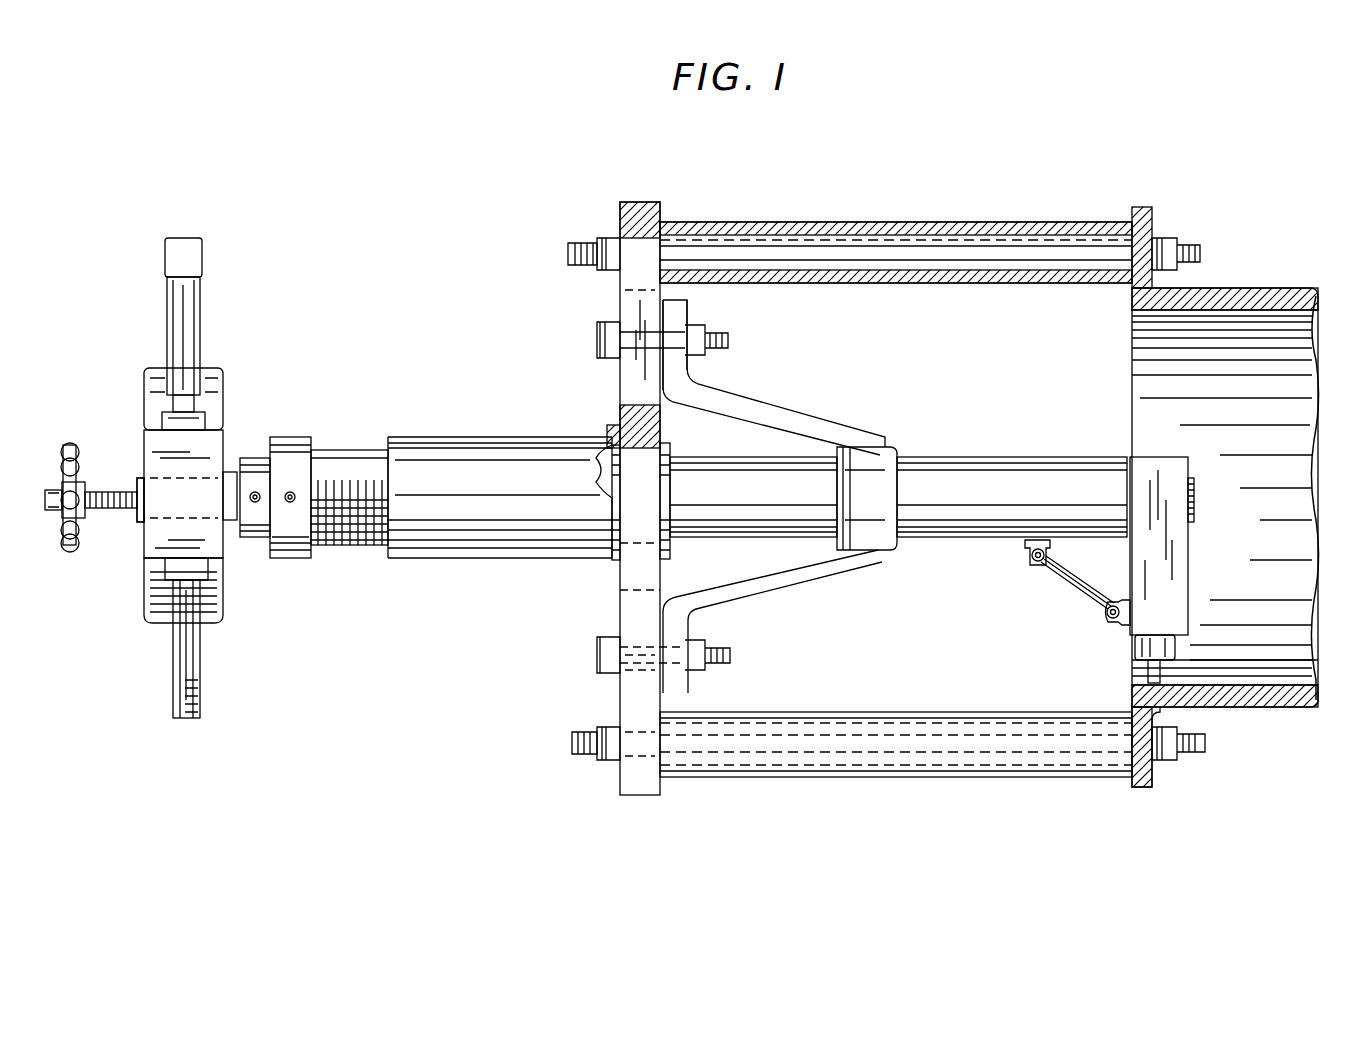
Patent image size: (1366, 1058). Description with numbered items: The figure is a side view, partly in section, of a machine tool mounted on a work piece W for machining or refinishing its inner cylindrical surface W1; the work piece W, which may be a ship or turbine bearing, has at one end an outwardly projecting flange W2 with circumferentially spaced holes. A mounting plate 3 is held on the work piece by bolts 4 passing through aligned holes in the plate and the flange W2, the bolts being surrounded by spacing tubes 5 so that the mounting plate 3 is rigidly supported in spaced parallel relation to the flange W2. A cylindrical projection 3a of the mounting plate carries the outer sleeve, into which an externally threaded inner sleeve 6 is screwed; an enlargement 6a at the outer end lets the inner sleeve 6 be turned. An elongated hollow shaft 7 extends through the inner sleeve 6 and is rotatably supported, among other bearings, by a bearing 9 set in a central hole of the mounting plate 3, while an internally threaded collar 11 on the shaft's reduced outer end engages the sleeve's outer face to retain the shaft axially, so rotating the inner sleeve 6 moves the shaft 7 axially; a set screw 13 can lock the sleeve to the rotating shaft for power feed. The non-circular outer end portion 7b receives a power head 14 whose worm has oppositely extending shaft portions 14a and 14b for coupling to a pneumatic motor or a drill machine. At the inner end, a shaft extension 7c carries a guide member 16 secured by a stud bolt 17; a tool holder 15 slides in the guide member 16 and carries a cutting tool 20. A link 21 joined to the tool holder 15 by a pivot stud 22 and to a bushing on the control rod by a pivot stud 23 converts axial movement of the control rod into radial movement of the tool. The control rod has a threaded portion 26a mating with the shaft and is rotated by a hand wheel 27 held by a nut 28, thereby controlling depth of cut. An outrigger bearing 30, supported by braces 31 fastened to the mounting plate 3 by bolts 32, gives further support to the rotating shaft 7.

The mounting plate 3 is at (663, 400).
The cylindrical projection 3a is at (476, 437).
The bolts 4 is at (1197, 248).
The spacing tubes 5 is at (797, 222).
The inner sleeve 6 is at (346, 548).
The enlargement 6a is at (290, 558).
The hollow shaft 7 is at (760, 462).
The outer end portion of shaft 7b is at (138, 480).
The shaft extension 7c is at (930, 540).
The bearing 9 is at (672, 548).
The internally threaded collar 11 is at (248, 458).
The set screw 13 is at (293, 495).
The power head 14 is at (144, 385).
The shaft portion of worm 14a is at (200, 342).
The shaft portion of worm 14b is at (180, 697).
The tool holder 15 is at (1135, 648).
The guide member 16 is at (1190, 540).
The stud bolt 17 is at (1196, 493).
The cutting tool 20 is at (1147, 672).
The link 21 is at (1058, 588).
The pivot stud 22 is at (1110, 600).
The pivot stud 23 is at (1022, 558).
The threaded portion of control rod 26a is at (108, 512).
The hand wheel 27 is at (68, 445).
The nut 28 is at (56, 515).
The outrigger bearing 30 is at (872, 475).
The braces 31 is at (770, 400).
The bolts 32 is at (597, 335).
The work piece W is at (1243, 703).
The inner cylindrical surface W1 is at (1305, 660).
The flange W2 is at (1140, 790).